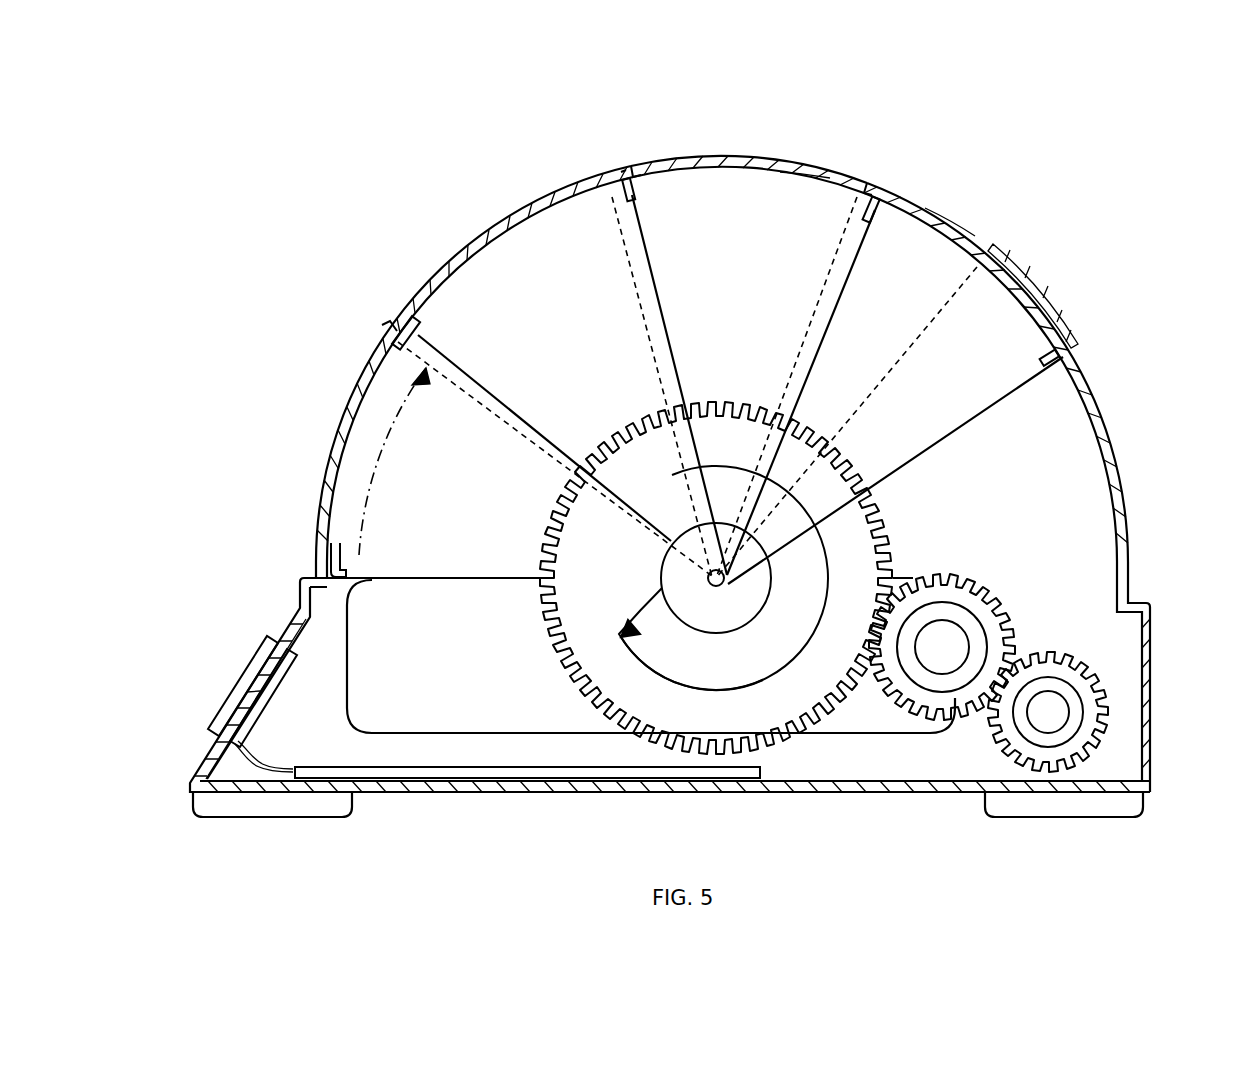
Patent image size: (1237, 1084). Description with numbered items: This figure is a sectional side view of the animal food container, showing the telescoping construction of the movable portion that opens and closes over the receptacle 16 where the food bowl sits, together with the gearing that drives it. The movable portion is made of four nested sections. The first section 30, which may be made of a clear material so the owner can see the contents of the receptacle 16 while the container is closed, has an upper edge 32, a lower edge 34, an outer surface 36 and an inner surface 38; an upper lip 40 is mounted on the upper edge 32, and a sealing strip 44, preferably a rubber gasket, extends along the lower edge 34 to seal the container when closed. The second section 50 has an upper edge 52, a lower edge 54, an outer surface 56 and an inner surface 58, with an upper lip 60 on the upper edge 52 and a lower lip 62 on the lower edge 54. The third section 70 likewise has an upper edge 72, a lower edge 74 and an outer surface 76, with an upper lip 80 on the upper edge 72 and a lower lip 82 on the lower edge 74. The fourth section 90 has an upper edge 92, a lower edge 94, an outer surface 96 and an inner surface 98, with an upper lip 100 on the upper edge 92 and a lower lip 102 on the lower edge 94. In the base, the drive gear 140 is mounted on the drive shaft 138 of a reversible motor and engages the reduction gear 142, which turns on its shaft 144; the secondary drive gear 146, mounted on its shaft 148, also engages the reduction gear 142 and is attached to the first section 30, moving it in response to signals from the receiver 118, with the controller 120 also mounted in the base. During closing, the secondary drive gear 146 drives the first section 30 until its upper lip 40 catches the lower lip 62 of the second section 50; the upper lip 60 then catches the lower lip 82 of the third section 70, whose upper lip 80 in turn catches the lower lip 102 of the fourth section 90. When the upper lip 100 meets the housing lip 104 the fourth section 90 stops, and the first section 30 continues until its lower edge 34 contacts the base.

The receptacle 16 is at (383, 720).
The first section 30 is at (701, 451).
The upper edge 32 is at (487, 385).
The lower edge 34 is at (404, 582).
The outer surface 36 is at (325, 470).
The inner surface 38 is at (375, 445).
The upper lip 40 is at (398, 338).
The sealing strip 44 is at (330, 565).
The second section 50 is at (474, 359).
The upper edge 52 is at (657, 277).
The lower edge 54 is at (545, 468).
The outer surface 56 is at (458, 237).
The inner surface 58 is at (445, 282).
The upper lip 60 is at (627, 200).
The lower lip 62 is at (380, 327).
The third section 70 is at (768, 190).
The upper edge 72 is at (897, 217).
The lower edge 74 is at (645, 348).
The outer surface 76 is at (803, 170).
The upper lip 80 is at (868, 214).
The lower lip 82 is at (608, 163).
The fourth section 90 is at (938, 267).
The upper edge 92 is at (942, 447).
The lower edge 94 is at (800, 330).
The outer surface 96 is at (952, 220).
The inner surface 98 is at (1003, 293).
The upper lip 100 is at (1047, 358).
The lower lip 102 is at (860, 190).
The housing lip 104 is at (993, 248).
The receiver 118 is at (245, 672).
The controller 120 is at (567, 777).
The drive shaft 138 is at (1052, 702).
The drive gear 140 is at (1105, 708).
The reduction gear 142 is at (969, 622).
The shaft 144 is at (947, 636).
The secondary drive gear 146 is at (767, 718).
The shaft 148 is at (716, 585).